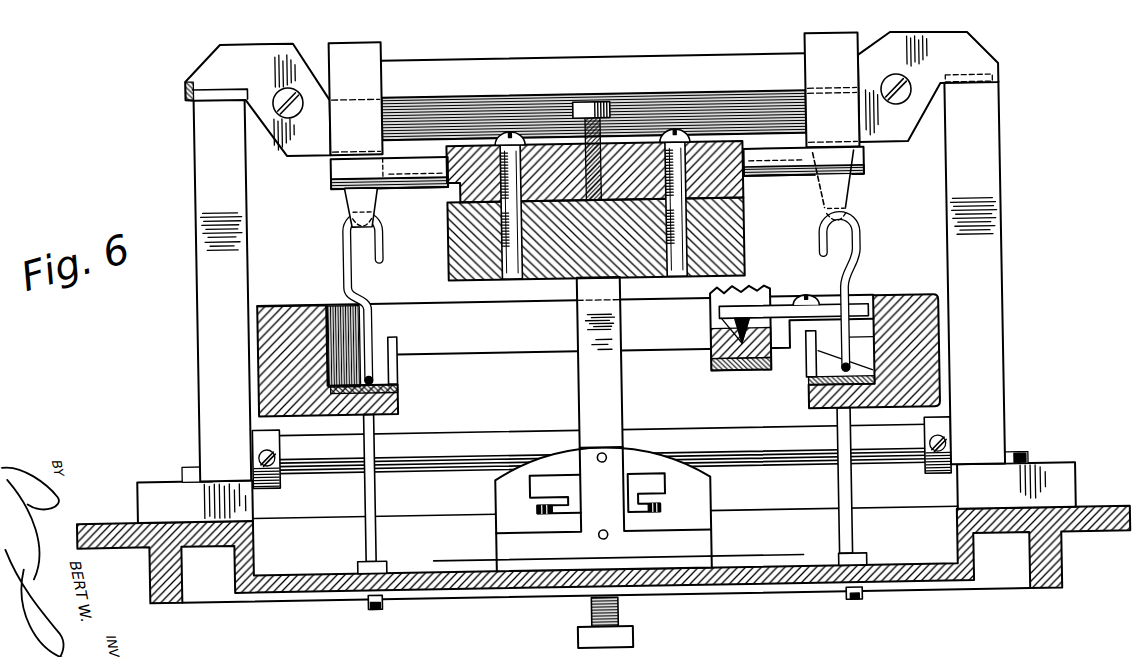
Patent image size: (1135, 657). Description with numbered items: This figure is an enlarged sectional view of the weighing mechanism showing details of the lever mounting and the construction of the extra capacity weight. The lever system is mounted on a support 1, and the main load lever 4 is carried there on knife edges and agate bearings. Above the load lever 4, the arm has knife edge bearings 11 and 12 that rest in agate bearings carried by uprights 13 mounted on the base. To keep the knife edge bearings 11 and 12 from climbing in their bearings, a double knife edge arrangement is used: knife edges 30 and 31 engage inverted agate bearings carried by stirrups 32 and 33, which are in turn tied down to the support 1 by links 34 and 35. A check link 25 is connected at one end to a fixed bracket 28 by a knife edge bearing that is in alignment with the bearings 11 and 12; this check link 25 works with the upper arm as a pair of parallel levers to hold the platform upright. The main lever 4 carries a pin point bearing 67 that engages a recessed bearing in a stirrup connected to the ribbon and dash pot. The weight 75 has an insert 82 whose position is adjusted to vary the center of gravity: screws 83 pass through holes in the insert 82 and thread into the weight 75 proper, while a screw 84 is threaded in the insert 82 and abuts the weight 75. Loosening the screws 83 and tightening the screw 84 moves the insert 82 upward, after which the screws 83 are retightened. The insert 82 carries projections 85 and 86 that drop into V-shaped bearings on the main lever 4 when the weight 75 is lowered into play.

The support 1 is at (903, 579).
The load lever 4 is at (925, 349).
The knife edge bearing 11 is at (983, 67).
The knife edge bearing 12 is at (216, 63).
The uprights 13 is at (199, 337).
The check link 25 is at (564, 513).
The fixed bracket 28 is at (690, 525).
The knife edge 30 is at (805, 94).
The knife edge 31 is at (399, 109).
The stirrup 32 is at (849, 201).
The stirrup 33 is at (352, 197).
The link 34 is at (854, 272).
The link 35 is at (344, 273).
The pin point bearing 67 is at (720, 320).
The weight 75 is at (735, 239).
The insert 82 is at (450, 187).
The screws 83 is at (512, 131).
The screw 84 is at (604, 103).
The projection 85 is at (336, 174).
The projection 86 is at (864, 172).